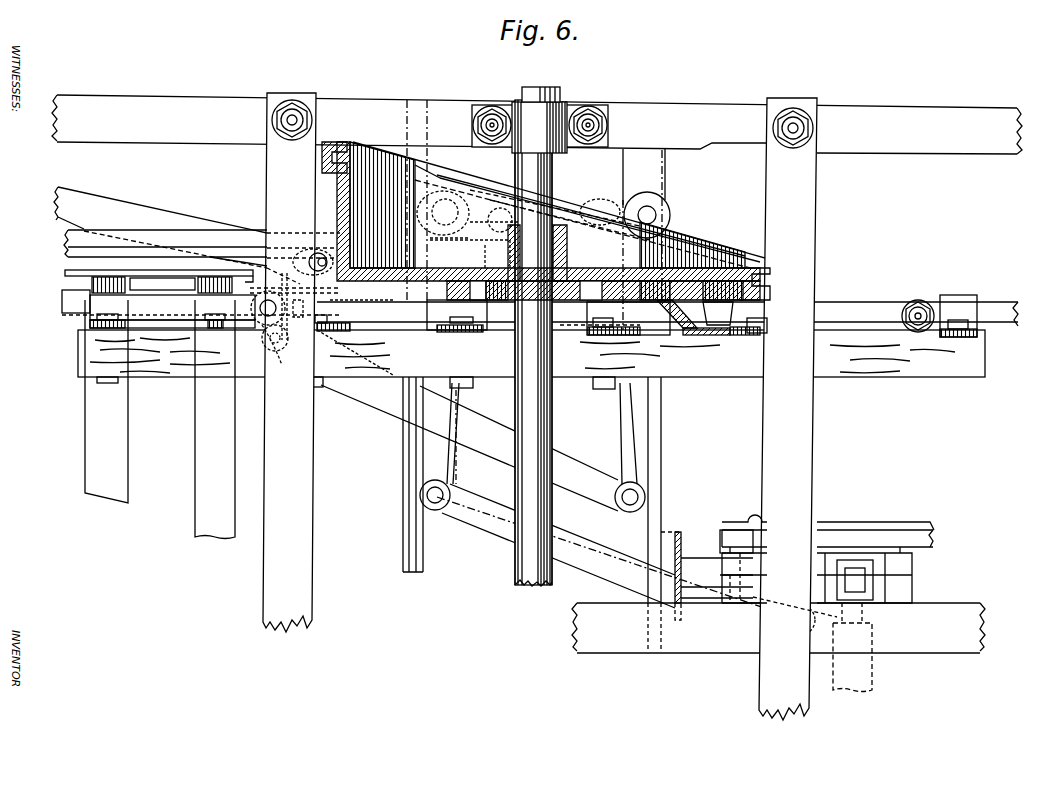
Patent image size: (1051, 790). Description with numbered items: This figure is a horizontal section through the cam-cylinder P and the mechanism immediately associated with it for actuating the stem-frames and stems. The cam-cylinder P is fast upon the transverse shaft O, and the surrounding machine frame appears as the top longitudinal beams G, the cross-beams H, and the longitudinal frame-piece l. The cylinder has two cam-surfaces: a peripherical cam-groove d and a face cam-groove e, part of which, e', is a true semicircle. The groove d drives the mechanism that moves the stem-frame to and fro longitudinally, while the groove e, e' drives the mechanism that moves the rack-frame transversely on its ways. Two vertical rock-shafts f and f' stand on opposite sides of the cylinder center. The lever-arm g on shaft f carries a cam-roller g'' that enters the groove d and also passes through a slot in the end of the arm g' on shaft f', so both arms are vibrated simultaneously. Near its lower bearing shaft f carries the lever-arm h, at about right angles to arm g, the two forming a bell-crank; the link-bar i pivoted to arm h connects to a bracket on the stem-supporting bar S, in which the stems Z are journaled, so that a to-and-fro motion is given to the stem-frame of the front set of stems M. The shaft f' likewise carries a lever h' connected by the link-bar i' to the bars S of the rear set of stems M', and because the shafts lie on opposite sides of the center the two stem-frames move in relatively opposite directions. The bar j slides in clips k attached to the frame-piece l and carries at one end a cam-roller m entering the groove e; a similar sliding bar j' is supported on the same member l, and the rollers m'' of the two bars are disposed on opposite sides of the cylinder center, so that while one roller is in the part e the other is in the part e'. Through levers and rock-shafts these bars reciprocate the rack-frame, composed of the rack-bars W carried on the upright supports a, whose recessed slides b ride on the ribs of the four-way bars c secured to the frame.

The top longitudinal beams G is at (537, 124).
The cross-beams H is at (540, 406).
The longitudinal frame-piece l is at (531, 353).
The front set of stems M is at (141, 430).
The rear set of stems M' is at (797, 656).
The stem-supporting bar S is at (928, 562).
The stems Z is at (862, 657).
The cam-cylinder P is at (725, 256).
The peripherical cam-groove d is at (332, 150).
The upright supports a is at (759, 281).
The vertical rock-shaft f is at (657, 193).
The vertical rock-shaft f' is at (443, 213).
The lever-arm g is at (587, 216).
The lever-arm g' is at (475, 238).
The cam-roller g'' is at (560, 207).
The bar j is at (667, 316).
The sliding bar j' is at (348, 313).
The clips k is at (958, 316).
The face cam-groove e is at (663, 317).
The semicircular portion of face cam-groove e' is at (457, 314).
The cam-roller m is at (695, 317).
The cam-rollers m'' is at (463, 310).
The four-way bars c is at (542, 375).
The lever-arm h is at (619, 444).
The lever h' is at (446, 443).
The link-bar i is at (464, 444).
The link-bar i' is at (626, 559).
The recessed slides b is at (678, 570).
The rack-bars W is at (759, 573).
The transverse shaft O is at (540, 336).